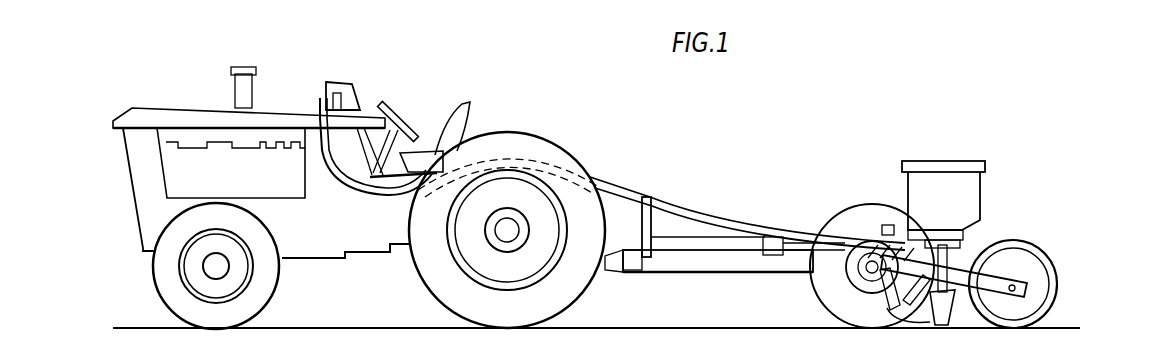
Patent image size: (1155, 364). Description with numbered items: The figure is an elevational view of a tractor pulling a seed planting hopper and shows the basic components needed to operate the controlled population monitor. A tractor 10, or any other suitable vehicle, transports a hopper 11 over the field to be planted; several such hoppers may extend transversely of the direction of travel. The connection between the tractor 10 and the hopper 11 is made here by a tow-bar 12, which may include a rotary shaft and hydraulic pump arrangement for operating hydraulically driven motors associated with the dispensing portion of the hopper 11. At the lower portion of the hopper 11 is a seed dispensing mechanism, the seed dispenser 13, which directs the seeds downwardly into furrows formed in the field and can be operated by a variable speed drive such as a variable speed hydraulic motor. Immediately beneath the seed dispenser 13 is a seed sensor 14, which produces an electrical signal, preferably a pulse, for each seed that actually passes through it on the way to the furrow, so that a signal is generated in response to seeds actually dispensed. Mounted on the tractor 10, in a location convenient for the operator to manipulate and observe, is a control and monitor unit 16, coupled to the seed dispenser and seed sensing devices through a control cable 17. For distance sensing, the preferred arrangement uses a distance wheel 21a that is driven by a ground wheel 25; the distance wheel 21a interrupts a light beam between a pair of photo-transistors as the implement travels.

The tractor 10 is at (268, 115).
The control and monitor unit 16 is at (352, 82).
The control cable 17 is at (631, 198).
The tow-bar 12 is at (698, 250).
The ground wheel 25 is at (840, 225).
The distance wheel 21a is at (858, 272).
The hopper 11 is at (912, 187).
The seed sensor 14 is at (948, 302).
The seed dispenser 13 is at (965, 242).